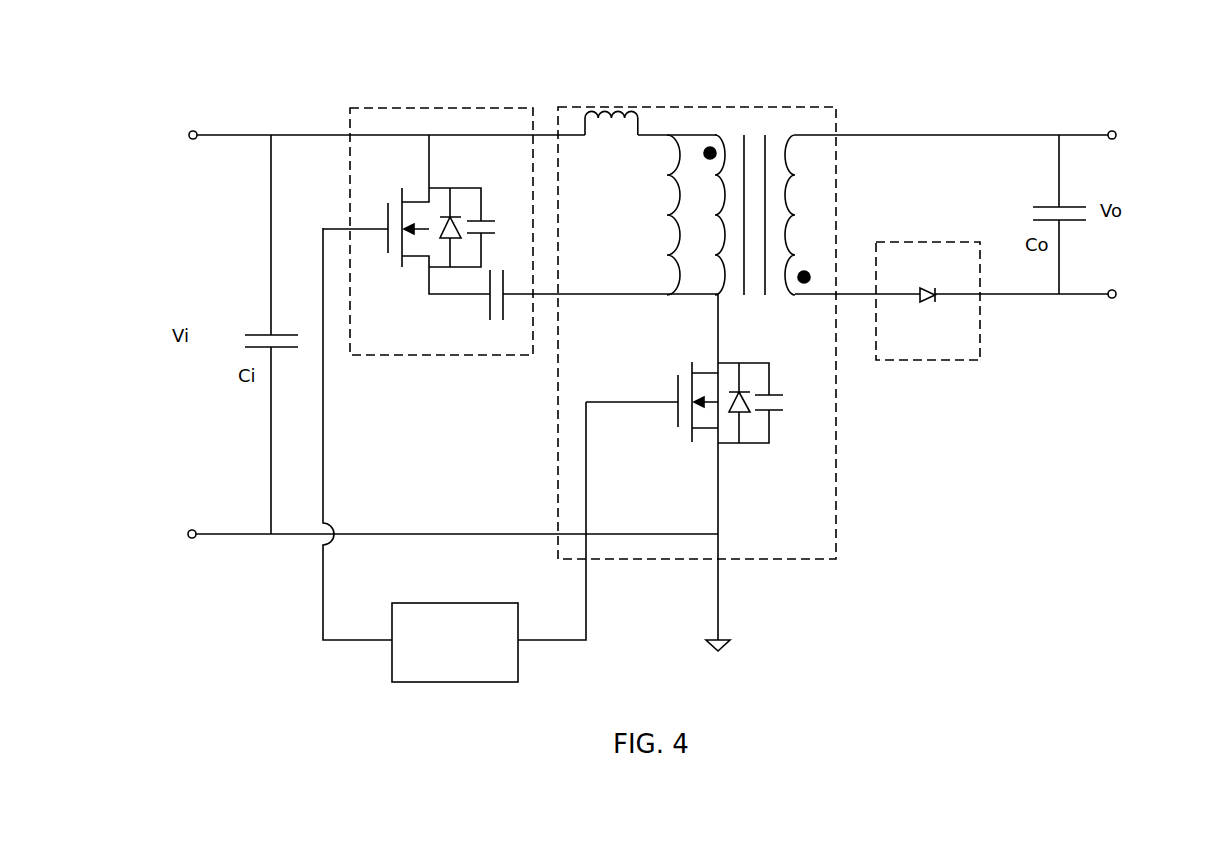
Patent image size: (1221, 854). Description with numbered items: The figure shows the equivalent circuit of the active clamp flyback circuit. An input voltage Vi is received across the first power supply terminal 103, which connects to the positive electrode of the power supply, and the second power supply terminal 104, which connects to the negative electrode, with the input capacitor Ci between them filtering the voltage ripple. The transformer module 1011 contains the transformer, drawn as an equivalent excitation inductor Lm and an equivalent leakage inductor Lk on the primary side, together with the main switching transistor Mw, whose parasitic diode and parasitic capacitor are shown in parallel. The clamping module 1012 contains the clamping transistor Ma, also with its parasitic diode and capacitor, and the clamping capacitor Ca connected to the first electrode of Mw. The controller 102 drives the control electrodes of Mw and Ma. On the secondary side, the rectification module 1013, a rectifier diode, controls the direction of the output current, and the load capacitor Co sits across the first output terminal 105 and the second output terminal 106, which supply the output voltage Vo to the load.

The first power supply terminal 103 is at (189, 131).
The second power supply terminal 104 is at (188, 538).
The first output terminal 105 is at (1116, 131).
The second output terminal 106 is at (1116, 298).
The transformer module 1011 is at (745, 108).
The clamping module 1012 is at (468, 108).
The rectification module 1013 is at (930, 242).
The controller 102 is at (455, 642).